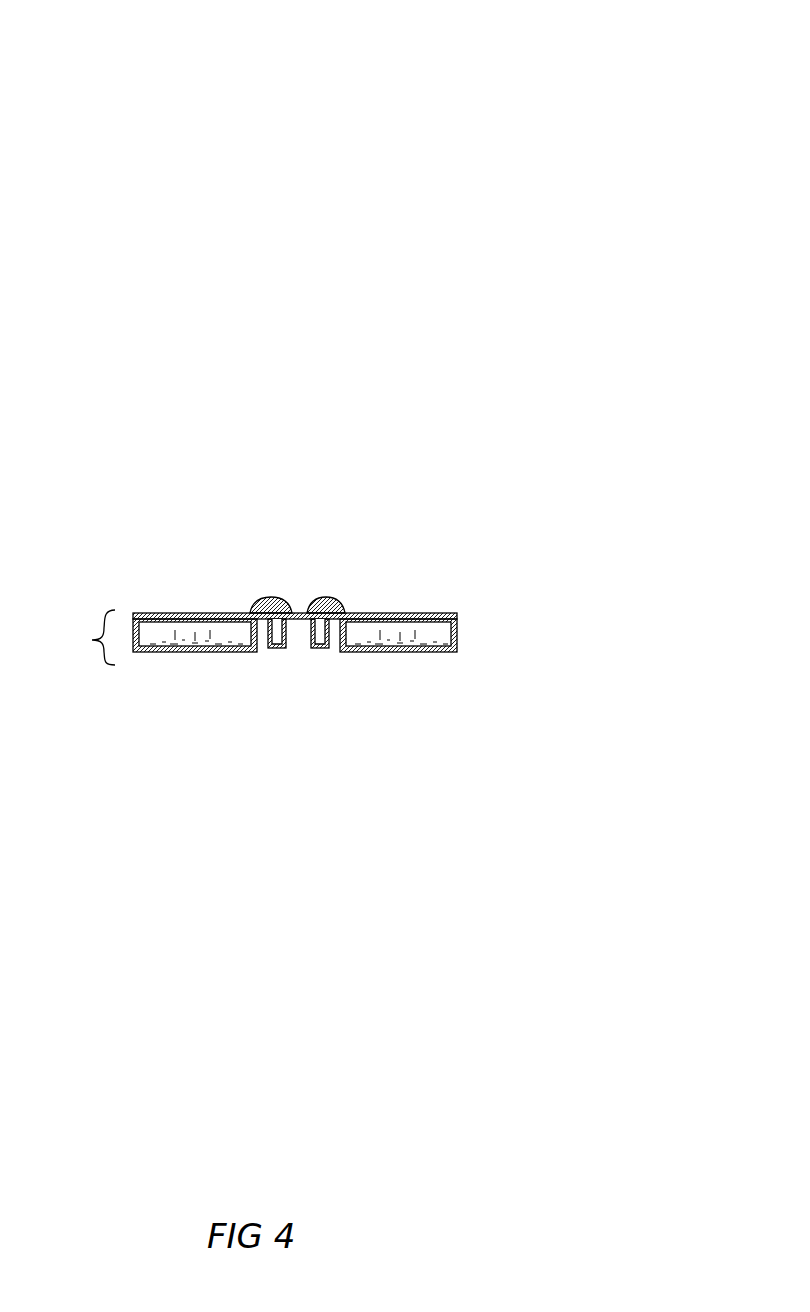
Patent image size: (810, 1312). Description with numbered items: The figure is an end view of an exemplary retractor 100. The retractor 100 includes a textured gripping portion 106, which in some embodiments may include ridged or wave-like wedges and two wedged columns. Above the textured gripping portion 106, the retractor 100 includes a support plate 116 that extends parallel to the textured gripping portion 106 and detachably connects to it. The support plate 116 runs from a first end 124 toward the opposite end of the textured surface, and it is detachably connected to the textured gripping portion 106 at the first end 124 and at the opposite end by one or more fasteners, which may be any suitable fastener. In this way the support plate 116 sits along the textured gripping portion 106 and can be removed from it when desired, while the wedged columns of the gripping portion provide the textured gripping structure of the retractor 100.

The retractor 100 is at (697, 70).
The textured gripping portion 106 is at (78, 637).
The support plate 116 is at (299, 613).
The first end 124 is at (300, 620).